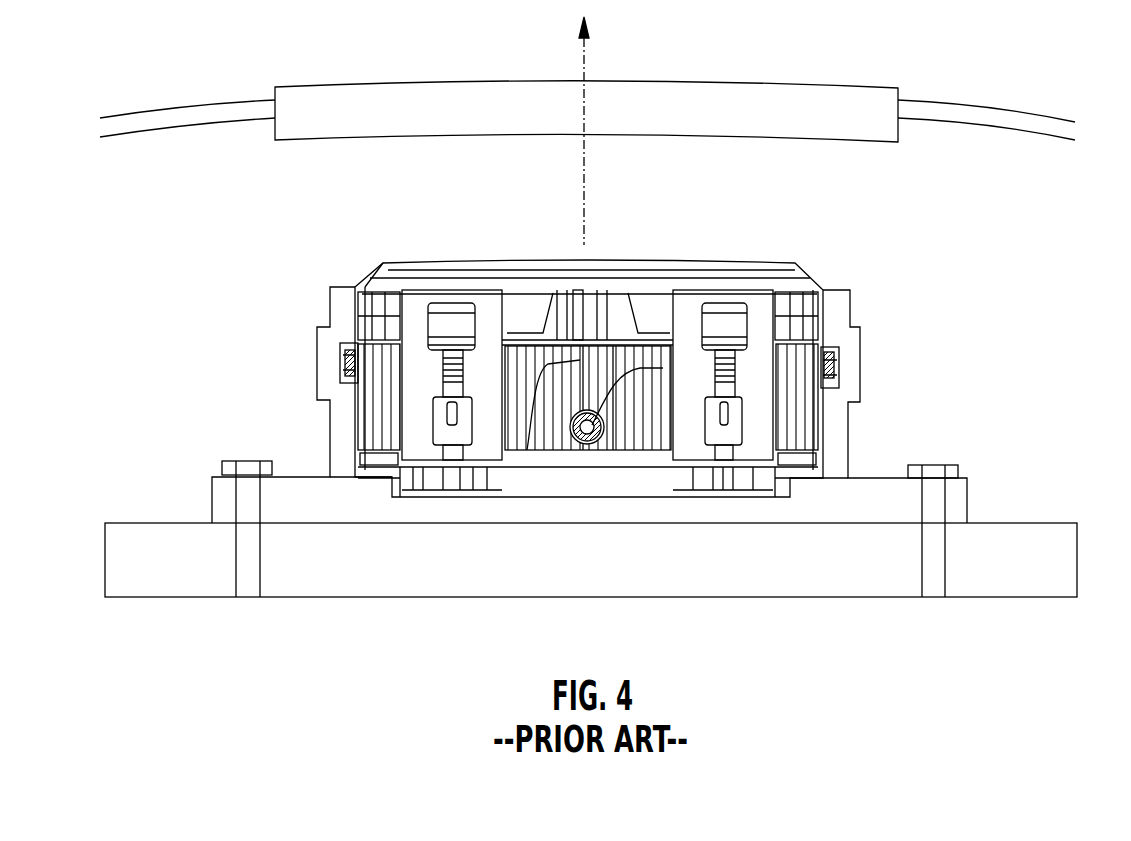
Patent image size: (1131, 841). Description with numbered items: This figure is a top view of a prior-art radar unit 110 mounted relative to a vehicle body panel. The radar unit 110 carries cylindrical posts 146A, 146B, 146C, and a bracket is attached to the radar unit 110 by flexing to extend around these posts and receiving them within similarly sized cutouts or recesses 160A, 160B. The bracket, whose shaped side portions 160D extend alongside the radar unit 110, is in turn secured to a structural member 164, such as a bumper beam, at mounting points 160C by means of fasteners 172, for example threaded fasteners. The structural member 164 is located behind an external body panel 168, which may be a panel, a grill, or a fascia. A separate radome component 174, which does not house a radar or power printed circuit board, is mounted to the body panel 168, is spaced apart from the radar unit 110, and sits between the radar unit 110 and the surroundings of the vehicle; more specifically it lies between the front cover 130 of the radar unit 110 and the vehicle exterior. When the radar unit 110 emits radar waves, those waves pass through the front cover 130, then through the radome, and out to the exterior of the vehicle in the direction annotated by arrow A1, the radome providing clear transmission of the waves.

The radar unit 110 is at (710, 245).
The front cover 130 is at (503, 262).
The cylindrical post 146A is at (823, 355).
The cylindrical post 146B is at (343, 353).
The cylindrical post 146C is at (586, 412).
The recess 160A is at (838, 377).
The recess 160B is at (337, 380).
The mounting point 160C is at (228, 522).
The mount bracket 160D is at (850, 440).
The structural member 164 is at (800, 572).
The external body panel 168 is at (162, 117).
The fastener 172 is at (247, 558).
The circuit board 174 is at (720, 93).
The arrow A1 is at (584, 58).